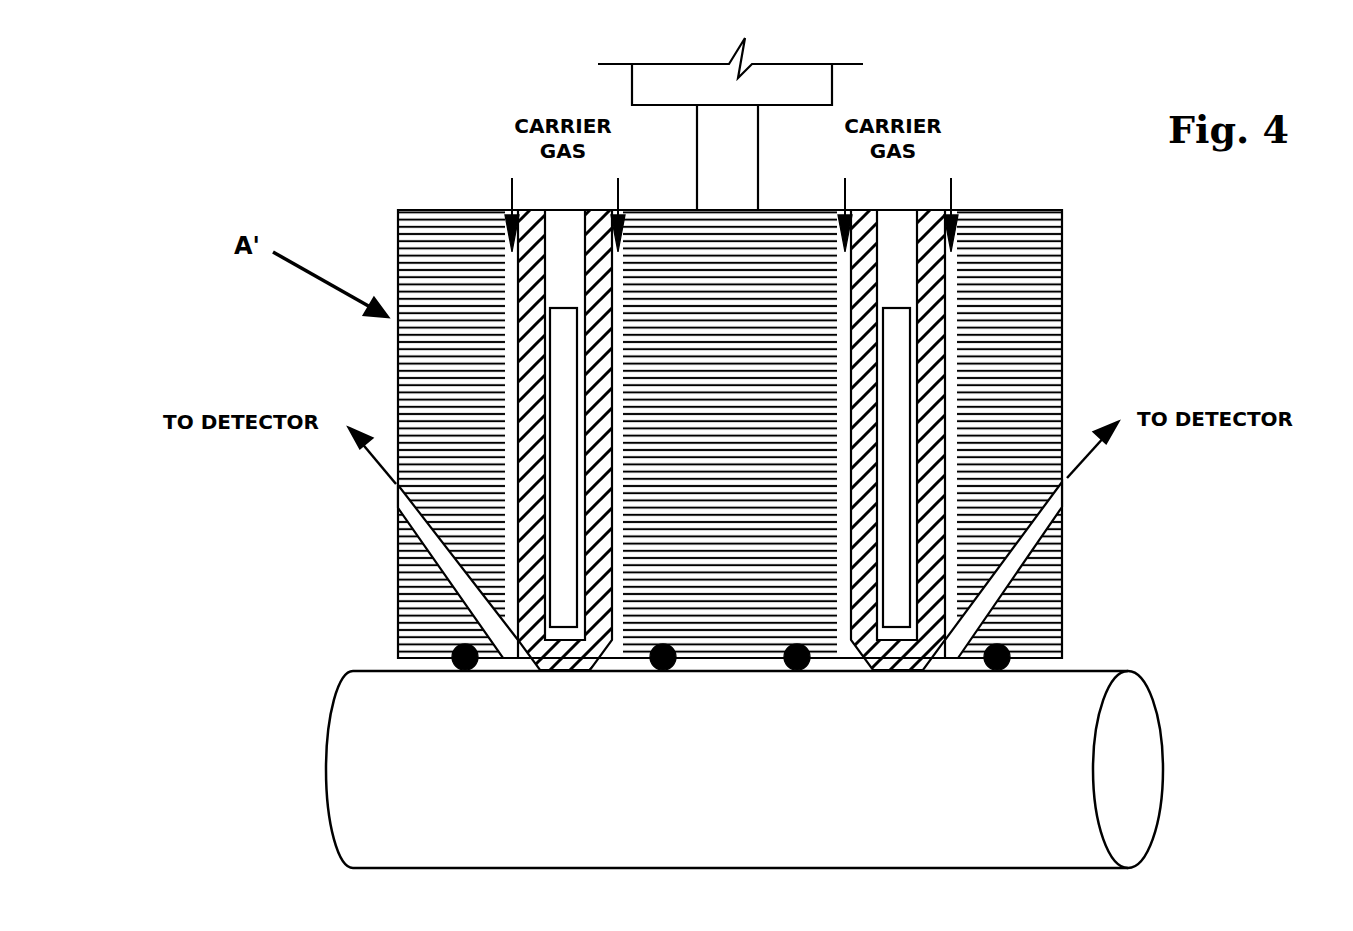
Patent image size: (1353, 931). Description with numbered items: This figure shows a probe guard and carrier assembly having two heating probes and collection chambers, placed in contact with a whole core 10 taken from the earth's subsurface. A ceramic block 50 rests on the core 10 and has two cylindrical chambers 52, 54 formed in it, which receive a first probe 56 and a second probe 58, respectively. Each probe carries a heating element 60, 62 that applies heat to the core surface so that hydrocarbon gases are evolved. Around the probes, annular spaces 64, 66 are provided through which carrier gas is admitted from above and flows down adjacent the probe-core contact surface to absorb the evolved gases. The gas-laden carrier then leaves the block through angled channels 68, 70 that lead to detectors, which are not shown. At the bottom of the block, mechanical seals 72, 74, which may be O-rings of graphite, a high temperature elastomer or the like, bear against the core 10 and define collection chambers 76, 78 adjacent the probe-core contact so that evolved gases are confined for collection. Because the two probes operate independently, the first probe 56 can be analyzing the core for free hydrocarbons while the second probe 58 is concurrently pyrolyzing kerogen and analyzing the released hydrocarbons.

The whole core 10 is at (705, 823).
The ceramic block 50 is at (1048, 268).
The cylindrical chamber 52 is at (558, 222).
The cylindrical chamber 54 is at (907, 255).
The first probe 56 is at (542, 272).
The second probe 58 is at (883, 232).
The heating element 60 is at (558, 473).
The heating element 62 is at (897, 358).
The annular space 64 is at (622, 212).
The annular space 66 is at (955, 212).
The channel 68 is at (421, 528).
The channel 70 is at (1030, 540).
The mechanical seal 72 is at (467, 670).
The mechanical seal 74 is at (1005, 668).
The collection chamber 76 is at (623, 665).
The collection chamber 78 is at (940, 663).